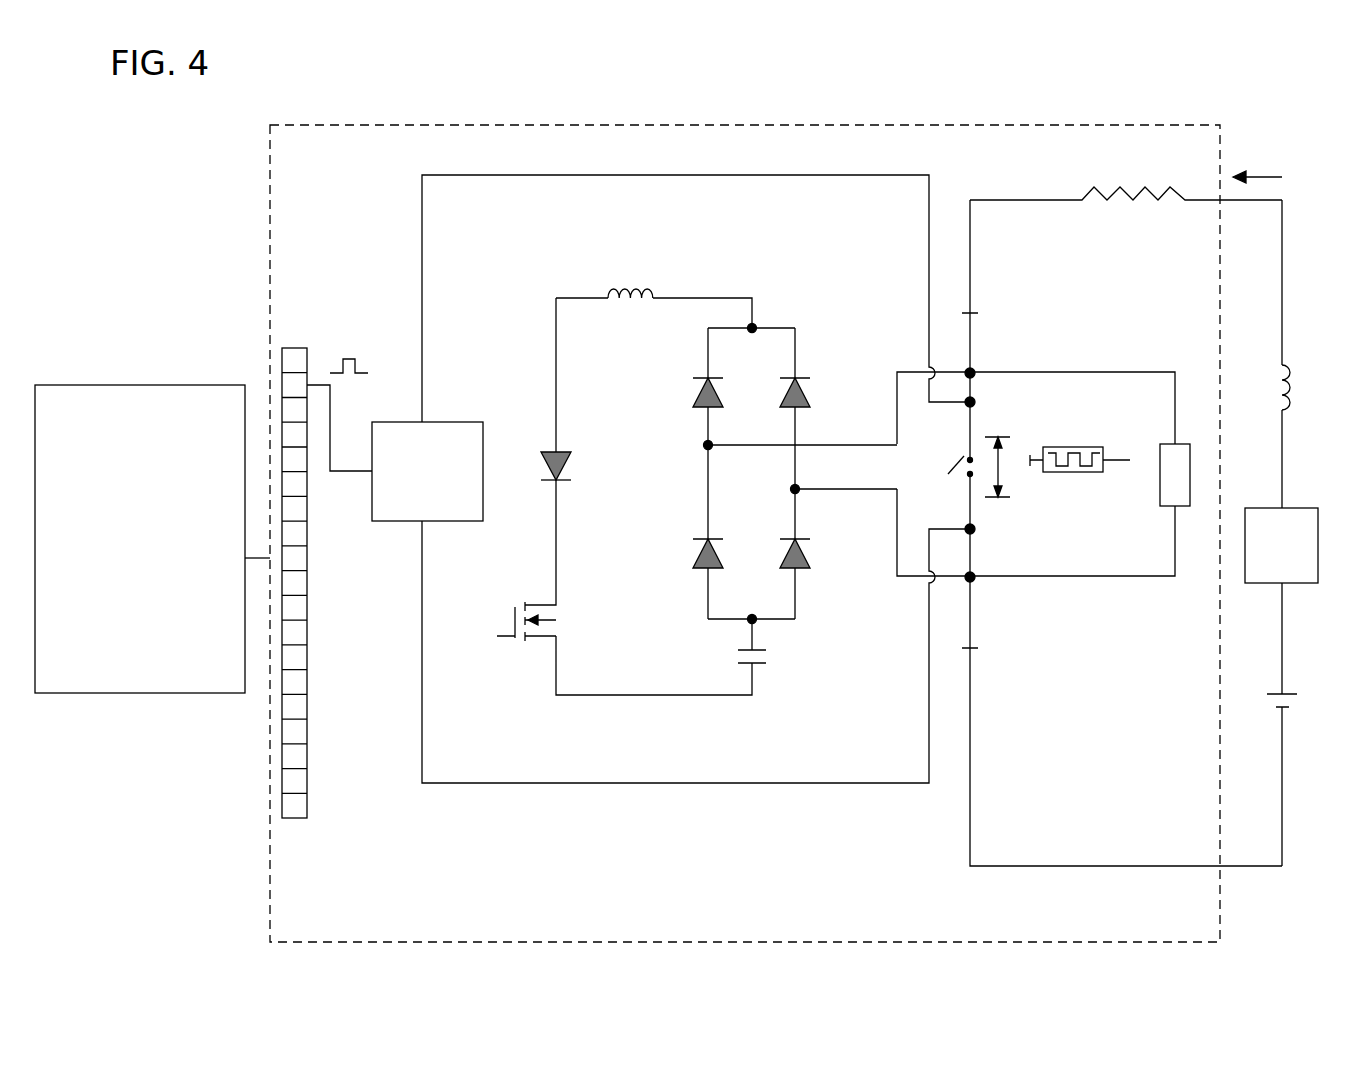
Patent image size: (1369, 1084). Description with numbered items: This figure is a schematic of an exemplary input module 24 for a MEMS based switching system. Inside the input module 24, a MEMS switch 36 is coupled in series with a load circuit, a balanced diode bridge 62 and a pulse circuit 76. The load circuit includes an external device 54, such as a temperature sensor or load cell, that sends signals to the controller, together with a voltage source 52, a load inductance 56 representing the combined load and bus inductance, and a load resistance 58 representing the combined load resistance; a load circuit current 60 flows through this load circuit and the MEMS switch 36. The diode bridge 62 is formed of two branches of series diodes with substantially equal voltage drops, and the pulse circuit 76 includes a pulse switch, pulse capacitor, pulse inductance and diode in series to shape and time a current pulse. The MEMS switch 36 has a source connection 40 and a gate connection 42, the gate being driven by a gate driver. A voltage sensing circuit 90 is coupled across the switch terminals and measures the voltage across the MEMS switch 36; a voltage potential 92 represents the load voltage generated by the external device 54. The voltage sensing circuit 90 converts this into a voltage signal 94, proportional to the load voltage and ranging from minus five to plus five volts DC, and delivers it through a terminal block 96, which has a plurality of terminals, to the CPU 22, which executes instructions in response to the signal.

The CPU 22 is at (100, 385).
The input module 24 is at (1008, 125).
The MEMS switch 36 is at (944, 460).
The second connection 40 is at (975, 402).
The third connection 42 is at (975, 529).
The voltage source 52 is at (1287, 694).
The external device 54 is at (1300, 508).
The load inductance 56 is at (1290, 370).
The load resistance 58 is at (1090, 187).
The load circuit current 60 is at (1288, 143).
The balanced diode bridge 62 is at (785, 300).
The pulse circuit 76 is at (667, 705).
The voltage sensing circuit 90 is at (440, 422).
The voltage potential 92 is at (1005, 455).
The voltage signal 94 is at (347, 352).
The terminal block 96 is at (290, 348).